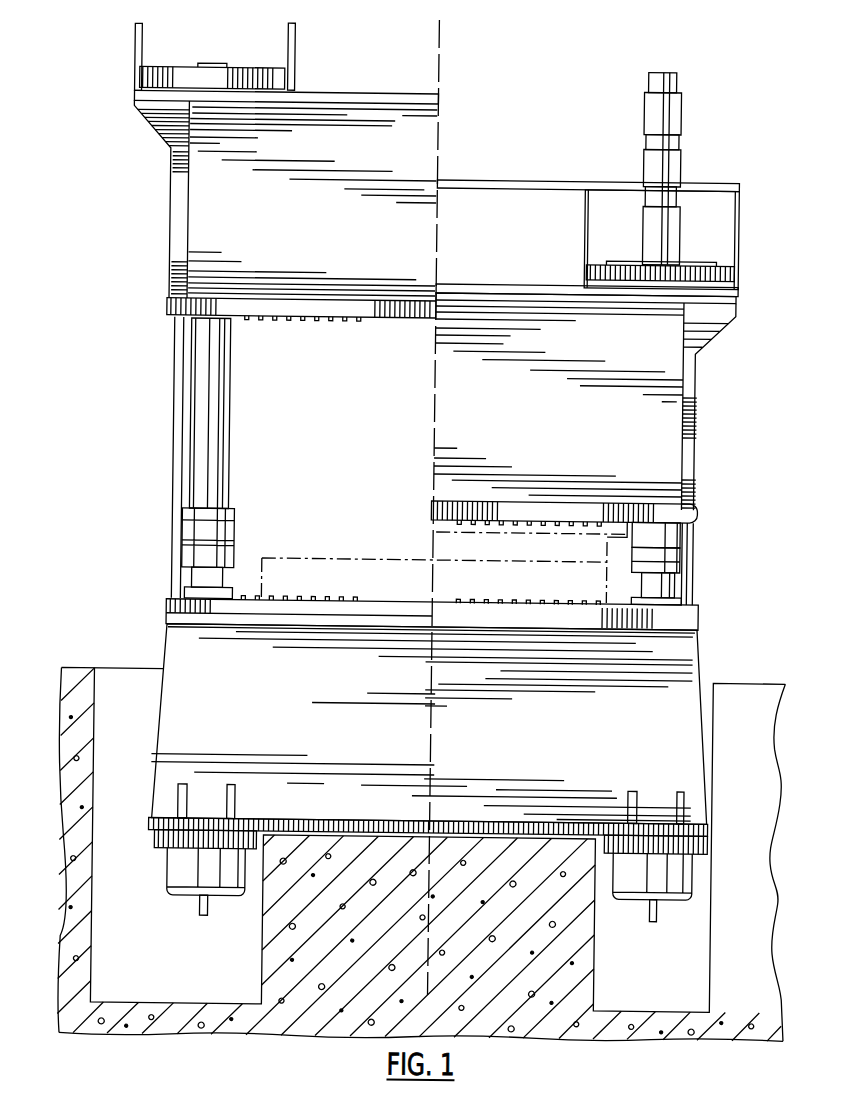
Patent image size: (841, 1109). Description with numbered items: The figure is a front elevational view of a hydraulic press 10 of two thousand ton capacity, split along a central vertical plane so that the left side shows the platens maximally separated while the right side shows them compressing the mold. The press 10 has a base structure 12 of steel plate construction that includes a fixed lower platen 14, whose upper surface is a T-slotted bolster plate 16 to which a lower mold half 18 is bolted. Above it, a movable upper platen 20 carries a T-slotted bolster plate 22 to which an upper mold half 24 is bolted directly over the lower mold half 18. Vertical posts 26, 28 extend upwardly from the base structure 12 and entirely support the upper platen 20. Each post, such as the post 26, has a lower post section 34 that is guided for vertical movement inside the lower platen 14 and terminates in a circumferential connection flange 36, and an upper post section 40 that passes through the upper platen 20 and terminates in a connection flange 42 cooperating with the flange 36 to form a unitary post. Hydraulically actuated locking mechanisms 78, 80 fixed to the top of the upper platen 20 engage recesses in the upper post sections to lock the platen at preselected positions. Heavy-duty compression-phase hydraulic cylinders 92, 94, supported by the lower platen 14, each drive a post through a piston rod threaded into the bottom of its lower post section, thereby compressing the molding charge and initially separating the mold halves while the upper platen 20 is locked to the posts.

The hydraulic press 10 is at (98, 157).
The base structure 12 is at (176, 646).
The lower platen 14 is at (198, 726).
The bolster plate 16 is at (340, 601).
The lower mold half 18 is at (376, 561).
The upper platen 20 is at (669, 372).
The bolster plate 22 is at (435, 508).
The upper mold half 24 is at (453, 541).
The post 26 is at (691, 144).
The post 28 is at (237, 430).
The lower post section 34 is at (676, 585).
The connection flange 36 is at (680, 564).
The upper post section 40 is at (656, 229).
The connection flange 42 is at (683, 533).
The locking mechanism 78 is at (722, 236).
The locking mechanism 80 is at (238, 58).
The compression-phase hydraulic cylinder 92 is at (692, 881).
The compression-phase hydraulic cylinder 94 is at (184, 871).